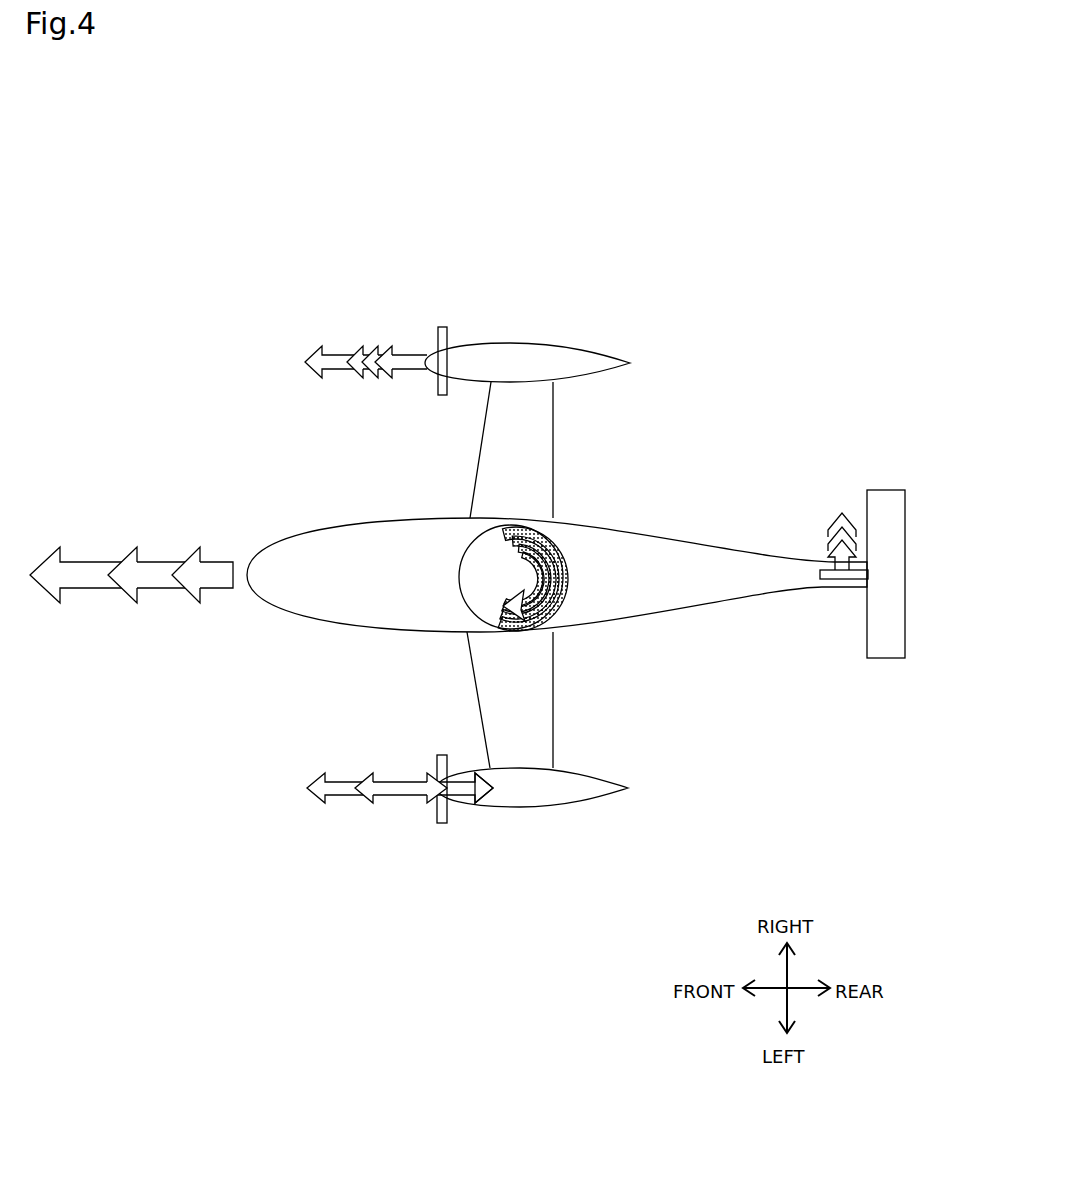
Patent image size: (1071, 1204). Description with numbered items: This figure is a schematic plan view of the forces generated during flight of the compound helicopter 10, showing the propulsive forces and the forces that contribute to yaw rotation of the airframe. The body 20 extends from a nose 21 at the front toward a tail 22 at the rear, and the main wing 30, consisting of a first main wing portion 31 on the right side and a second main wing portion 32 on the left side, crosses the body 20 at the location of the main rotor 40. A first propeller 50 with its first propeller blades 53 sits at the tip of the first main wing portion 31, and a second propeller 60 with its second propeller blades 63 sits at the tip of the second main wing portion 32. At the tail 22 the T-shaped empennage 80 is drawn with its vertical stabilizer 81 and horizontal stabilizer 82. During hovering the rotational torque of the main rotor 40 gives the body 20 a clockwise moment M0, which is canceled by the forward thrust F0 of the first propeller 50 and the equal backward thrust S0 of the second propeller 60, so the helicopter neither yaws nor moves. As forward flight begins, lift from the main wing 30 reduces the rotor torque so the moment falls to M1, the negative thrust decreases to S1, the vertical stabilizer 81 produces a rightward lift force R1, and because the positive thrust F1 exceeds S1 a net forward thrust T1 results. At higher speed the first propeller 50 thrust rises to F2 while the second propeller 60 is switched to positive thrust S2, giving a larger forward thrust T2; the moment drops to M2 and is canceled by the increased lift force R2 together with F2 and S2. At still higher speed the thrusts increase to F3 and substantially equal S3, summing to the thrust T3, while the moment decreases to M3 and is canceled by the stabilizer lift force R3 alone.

The compound helicopter 10 is at (508, 212).
The body 20 is at (330, 555).
The nose 21 is at (240, 585).
The tail 22 is at (852, 588).
The main wing 30 is at (472, 457).
The first main wing portion 31 is at (527, 467).
The second main wing portion 32 is at (532, 737).
The main rotor 40 is at (593, 616).
The first propeller 50 is at (421, 316).
The first propeller blades 53 is at (447, 336).
The second propeller 60 is at (408, 770).
The second propeller blades 63 is at (437, 760).
The empennage 80 is at (893, 486).
The vertical stabilizer 81 is at (833, 580).
The horizontal stabilizer 82 is at (883, 610).
The forward thrust (positive thrust) F0 is at (395, 353).
The positive thrust F1 is at (378, 353).
The positive thrust F2 is at (362, 353).
The positive thrust F3 is at (322, 357).
The forward thrust T1 is at (215, 570).
The positive thrust T2 is at (162, 570).
The positive thrust T3 is at (82, 572).
The backward thrust (negative thrust) S0 is at (465, 797).
The negative thrust S1 is at (447, 797).
The positive thrust S2 is at (400, 797).
The positive thrust S3 is at (337, 797).
The lift force R1 is at (836, 551).
The lift force R2 is at (838, 534).
The lift force R3 is at (840, 516).
The moment M0 is at (540, 603).
The moment M1 is at (548, 600).
The moment M2 is at (553, 597).
The moment M3 is at (558, 594).